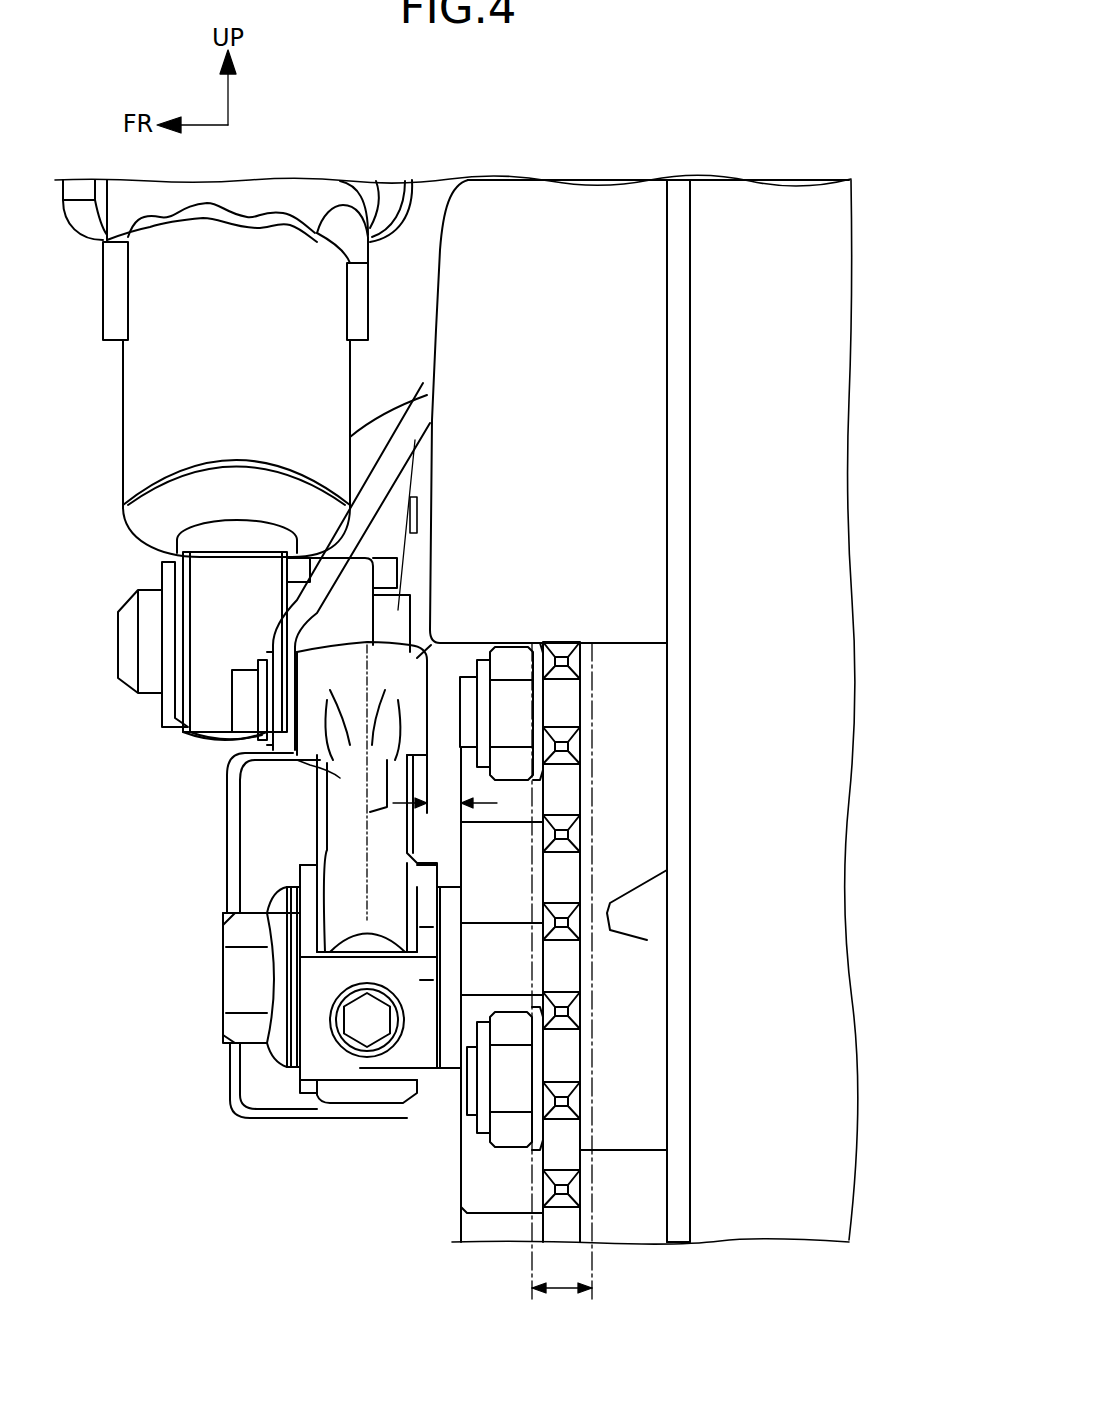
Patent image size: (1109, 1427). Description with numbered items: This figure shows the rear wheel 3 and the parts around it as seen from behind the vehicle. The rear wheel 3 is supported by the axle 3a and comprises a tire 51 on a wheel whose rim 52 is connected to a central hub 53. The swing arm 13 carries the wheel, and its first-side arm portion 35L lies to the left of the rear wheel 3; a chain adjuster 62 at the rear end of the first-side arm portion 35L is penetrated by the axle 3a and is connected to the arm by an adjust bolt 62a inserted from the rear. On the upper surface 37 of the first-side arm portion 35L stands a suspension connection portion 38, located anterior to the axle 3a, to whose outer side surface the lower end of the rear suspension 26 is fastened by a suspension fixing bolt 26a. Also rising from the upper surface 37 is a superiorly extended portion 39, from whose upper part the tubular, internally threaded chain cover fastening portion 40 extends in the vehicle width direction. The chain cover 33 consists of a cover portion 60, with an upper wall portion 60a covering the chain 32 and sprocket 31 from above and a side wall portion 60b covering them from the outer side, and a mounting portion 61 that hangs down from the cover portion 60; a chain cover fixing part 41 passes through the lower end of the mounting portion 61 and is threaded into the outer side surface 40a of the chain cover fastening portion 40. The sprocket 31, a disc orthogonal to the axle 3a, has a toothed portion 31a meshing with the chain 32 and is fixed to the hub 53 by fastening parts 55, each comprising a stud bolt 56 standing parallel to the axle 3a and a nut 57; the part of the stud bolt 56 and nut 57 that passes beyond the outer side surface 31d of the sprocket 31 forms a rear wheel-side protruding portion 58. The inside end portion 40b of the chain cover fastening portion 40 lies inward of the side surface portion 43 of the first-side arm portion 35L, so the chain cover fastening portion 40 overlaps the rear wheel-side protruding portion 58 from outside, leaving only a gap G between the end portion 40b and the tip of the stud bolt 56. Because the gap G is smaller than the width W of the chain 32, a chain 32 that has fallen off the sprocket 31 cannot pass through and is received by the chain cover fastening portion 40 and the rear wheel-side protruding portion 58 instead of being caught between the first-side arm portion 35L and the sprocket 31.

The rear wheel 3 is at (770, 180).
The axle 3a is at (237, 992).
The swing arm 13 is at (233, 833).
The rear suspension 26 is at (128, 380).
The suspension fixing bolt 26a is at (118, 640).
The sprocket 31 is at (560, 1250).
The toothed portion 31a is at (577, 1245).
The outer side surface 31d is at (542, 1147).
The chain 32 is at (597, 1128).
The chain cover 33 is at (603, 180).
The first-side arm portion 35L is at (320, 852).
The upper surface 37 is at (353, 830).
The suspension connection portion 38 is at (305, 575).
The superiorly extended portion 39 is at (353, 763).
The chain cover fastening portion 40 is at (397, 645).
The outer side surface 40a is at (240, 691).
The end portion 40b is at (430, 688).
The chain cover fixing part 41 is at (232, 717).
The side surface portion 43 is at (612, 905).
The tire 51 is at (803, 196).
The rim 52 is at (678, 192).
The hub 53 is at (630, 1225).
The fastening parts 55 is at (908, 642).
The stud bolt 56 is at (500, 680).
The nut 57 is at (510, 710).
The rear wheel-side protruding portion 58 is at (512, 757).
The cover portion 60 is at (562, 178).
The upper wall portion 60a is at (525, 226).
The side wall portion 60b is at (427, 343).
The mounting portion 61 is at (377, 477).
The chain adjuster 62 is at (310, 1048).
The adjust bolt 62a is at (362, 1028).
The gap G is at (443, 808).
The width W is at (548, 1295).